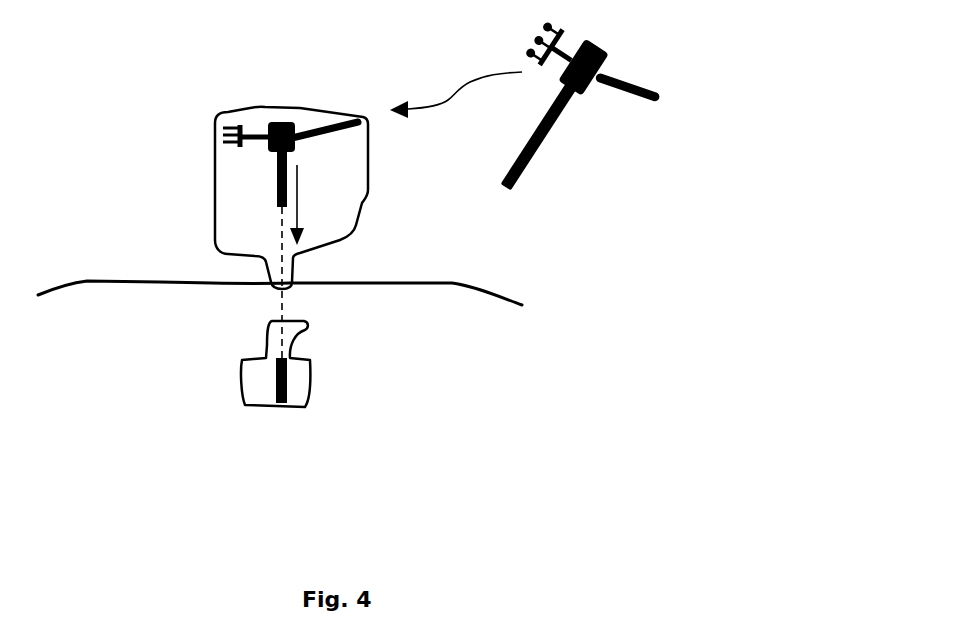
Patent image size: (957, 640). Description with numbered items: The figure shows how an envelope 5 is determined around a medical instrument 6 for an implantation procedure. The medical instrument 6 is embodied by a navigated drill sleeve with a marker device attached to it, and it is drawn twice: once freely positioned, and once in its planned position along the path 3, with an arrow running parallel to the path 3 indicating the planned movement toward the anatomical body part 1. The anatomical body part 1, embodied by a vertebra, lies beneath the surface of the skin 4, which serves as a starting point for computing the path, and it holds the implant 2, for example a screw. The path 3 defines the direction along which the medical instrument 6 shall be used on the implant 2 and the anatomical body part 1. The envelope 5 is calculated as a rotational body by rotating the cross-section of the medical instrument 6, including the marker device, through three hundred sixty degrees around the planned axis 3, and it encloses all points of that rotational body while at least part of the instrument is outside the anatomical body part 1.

The anatomical body part 1 is at (255, 390).
The implant 2 is at (286, 404).
The path 3 is at (282, 303).
The skin 4 is at (493, 292).
The envelope 5 is at (215, 200).
The medical instrument 6 is at (563, 121).